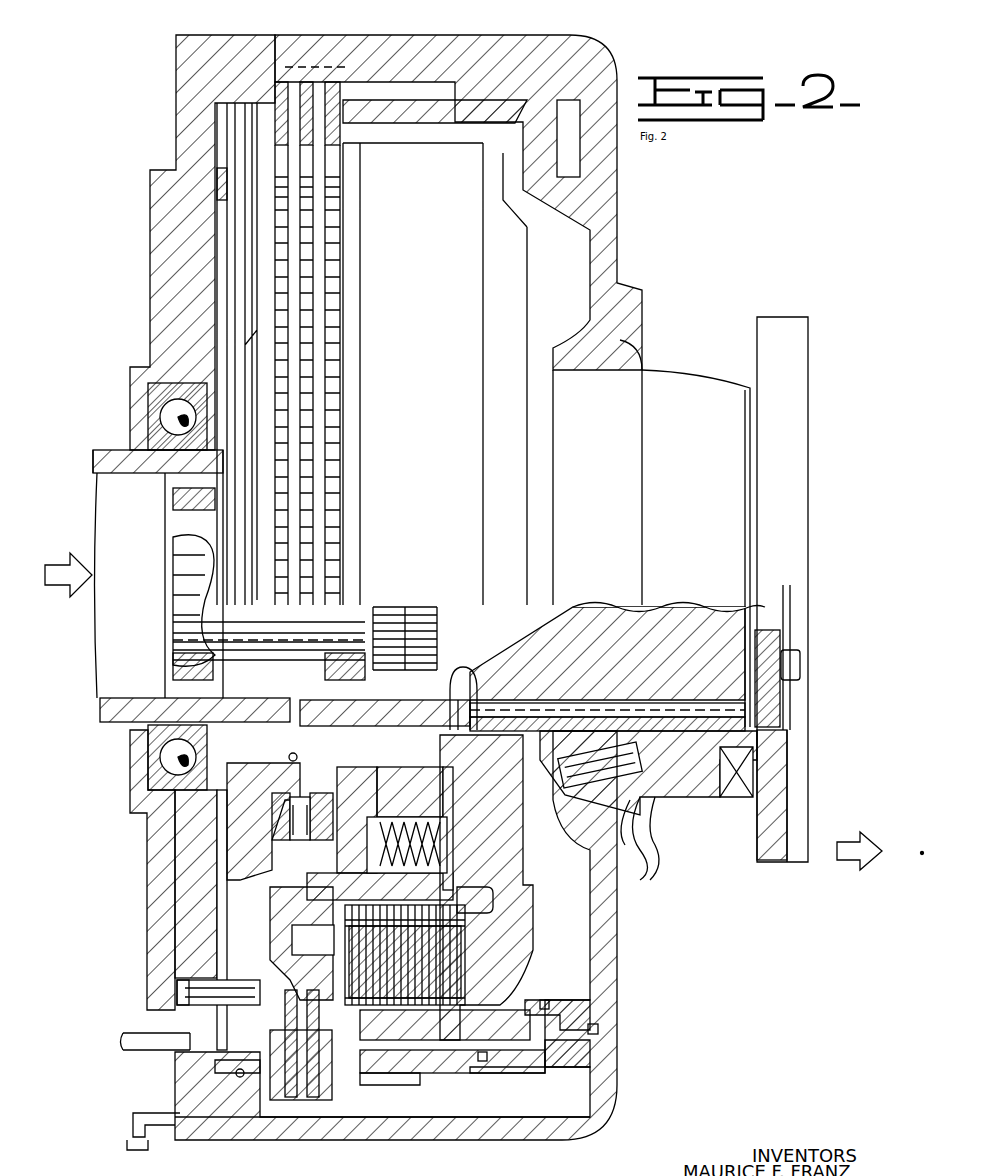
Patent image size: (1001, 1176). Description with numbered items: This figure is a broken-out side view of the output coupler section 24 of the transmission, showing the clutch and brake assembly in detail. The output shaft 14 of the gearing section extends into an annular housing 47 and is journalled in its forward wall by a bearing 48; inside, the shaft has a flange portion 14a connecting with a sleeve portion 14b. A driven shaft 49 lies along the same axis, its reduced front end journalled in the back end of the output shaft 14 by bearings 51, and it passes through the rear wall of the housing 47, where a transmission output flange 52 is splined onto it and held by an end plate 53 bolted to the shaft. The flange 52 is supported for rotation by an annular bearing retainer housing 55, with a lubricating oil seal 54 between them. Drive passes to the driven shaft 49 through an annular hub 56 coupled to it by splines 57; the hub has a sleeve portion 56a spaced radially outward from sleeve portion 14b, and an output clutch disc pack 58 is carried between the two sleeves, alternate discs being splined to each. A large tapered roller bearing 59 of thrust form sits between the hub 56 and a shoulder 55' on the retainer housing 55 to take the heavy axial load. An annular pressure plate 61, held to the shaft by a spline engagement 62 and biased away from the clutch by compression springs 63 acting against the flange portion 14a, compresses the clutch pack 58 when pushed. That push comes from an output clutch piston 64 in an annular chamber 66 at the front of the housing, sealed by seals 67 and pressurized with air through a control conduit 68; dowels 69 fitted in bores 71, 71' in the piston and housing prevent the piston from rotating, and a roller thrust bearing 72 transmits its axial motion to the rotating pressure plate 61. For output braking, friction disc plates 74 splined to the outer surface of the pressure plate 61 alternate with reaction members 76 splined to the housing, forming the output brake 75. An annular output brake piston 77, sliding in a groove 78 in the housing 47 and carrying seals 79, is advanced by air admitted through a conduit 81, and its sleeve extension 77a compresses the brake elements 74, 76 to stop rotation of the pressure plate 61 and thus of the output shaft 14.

The output shaft 14 is at (88, 712).
The flange portion 14a is at (466, 702).
The sleeve portion 14b is at (480, 903).
The output coupler section 24 is at (618, 1100).
The annular housing 47 is at (418, 1135).
The bearing 48 is at (160, 757).
The driven shaft 49 is at (588, 670).
The bearings 51 is at (343, 662).
The transmission output flange 52 is at (778, 858).
The end plate 53 is at (790, 705).
The lubricating oil seal 54 is at (733, 800).
The bearing retainer housing 55 is at (667, 847).
The shoulder 55' is at (665, 831).
The annular hub 56 is at (515, 807).
The sleeve portion 56a is at (490, 1075).
The splines 57 is at (605, 704).
The output clutch disc pack 58 is at (463, 958).
The tapered roller bearing 59 is at (640, 760).
The pressure plate 61 is at (330, 955).
The spline engagement 62 is at (355, 768).
The compression springs 63 is at (375, 845).
The output clutch piston 64 is at (205, 868).
The annular chamber 66 is at (190, 892).
The seals 67 is at (298, 750).
The control conduit 68 is at (150, 1052).
The dowels 69 is at (180, 992).
The bore 71 is at (203, 920).
The bore 71' is at (143, 980).
The roller thrust bearing 72 is at (295, 800).
The friction disc plates 74 is at (313, 1100).
The output brake 75 is at (240, 1085).
The reaction members 76 is at (290, 1100).
The output brake piston 77 is at (592, 1014).
The sleeve extension 77a is at (405, 1088).
The groove 78 is at (592, 1058).
The seals 79 is at (548, 1005).
The conduit 81 is at (600, 1030).